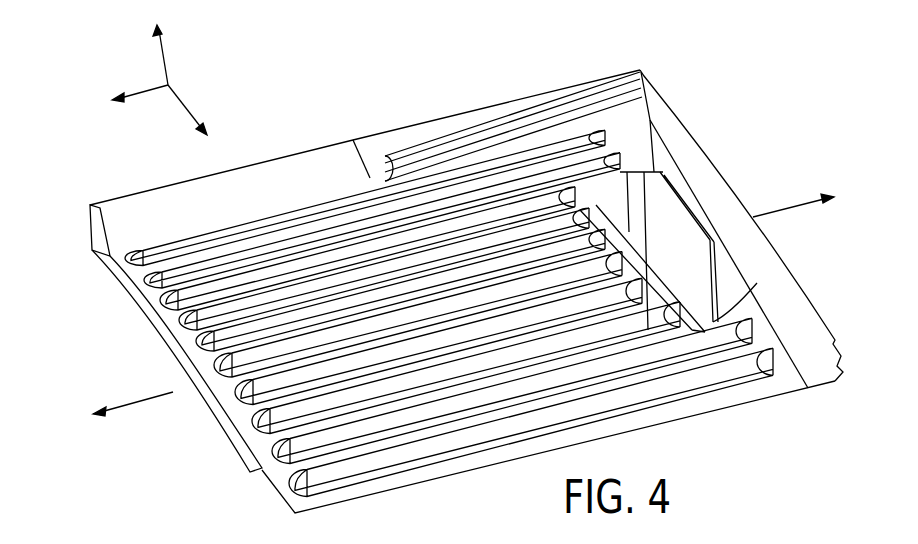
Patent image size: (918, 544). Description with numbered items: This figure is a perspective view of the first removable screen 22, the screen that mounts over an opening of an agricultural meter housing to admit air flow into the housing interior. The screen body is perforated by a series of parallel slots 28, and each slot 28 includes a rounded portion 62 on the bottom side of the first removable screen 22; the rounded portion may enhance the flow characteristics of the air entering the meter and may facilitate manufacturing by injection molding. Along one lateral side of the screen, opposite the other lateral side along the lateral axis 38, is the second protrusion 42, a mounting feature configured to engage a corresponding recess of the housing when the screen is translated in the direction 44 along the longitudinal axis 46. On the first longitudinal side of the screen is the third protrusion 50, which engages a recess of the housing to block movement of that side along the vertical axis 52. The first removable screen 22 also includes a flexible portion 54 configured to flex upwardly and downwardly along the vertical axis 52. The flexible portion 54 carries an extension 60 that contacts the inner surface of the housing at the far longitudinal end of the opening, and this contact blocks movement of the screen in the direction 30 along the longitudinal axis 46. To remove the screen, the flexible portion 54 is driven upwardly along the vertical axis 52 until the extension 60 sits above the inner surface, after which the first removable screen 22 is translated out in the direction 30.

The first removable screen 22 is at (692, 142).
The slot 28 is at (295, 482).
The direction 30 is at (788, 208).
The lateral axis 38 is at (187, 107).
The second protrusion 42 is at (513, 123).
The direction 44 is at (137, 402).
The longitudinal axis 46 is at (143, 90).
The third protrusion 50 is at (208, 417).
The vertical axis 52 is at (167, 60).
The flexible portion 54 is at (555, 200).
The extension 60 is at (697, 273).
The rounded portion 62 is at (397, 470).